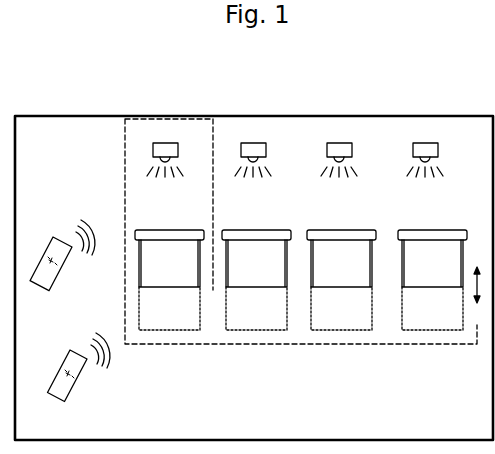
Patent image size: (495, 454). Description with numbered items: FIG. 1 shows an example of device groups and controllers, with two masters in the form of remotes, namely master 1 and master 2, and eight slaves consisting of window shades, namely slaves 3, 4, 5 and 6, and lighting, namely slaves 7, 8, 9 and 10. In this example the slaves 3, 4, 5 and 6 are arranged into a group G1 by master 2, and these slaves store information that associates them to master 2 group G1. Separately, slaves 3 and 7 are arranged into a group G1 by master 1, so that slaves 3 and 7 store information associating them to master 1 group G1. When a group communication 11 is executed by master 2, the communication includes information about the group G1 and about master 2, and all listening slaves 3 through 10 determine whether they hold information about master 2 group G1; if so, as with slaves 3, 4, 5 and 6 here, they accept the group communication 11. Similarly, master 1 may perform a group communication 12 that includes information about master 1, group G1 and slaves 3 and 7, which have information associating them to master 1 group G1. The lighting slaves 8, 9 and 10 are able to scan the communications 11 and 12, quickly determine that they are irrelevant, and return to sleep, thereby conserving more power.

The master 1 is at (47, 248).
The master 2 is at (58, 373).
The slave 3 is at (188, 229).
The slave 4 is at (276, 229).
The slave 5 is at (363, 229).
The slave 6 is at (452, 229).
The slave 7 is at (165, 143).
The slave 8 is at (253, 143).
The slave 9 is at (340, 143).
The slave 10 is at (426, 143).
The group communication 11 is at (97, 341).
The group communication 12 is at (91, 248).
The group G1 is at (125, 197).